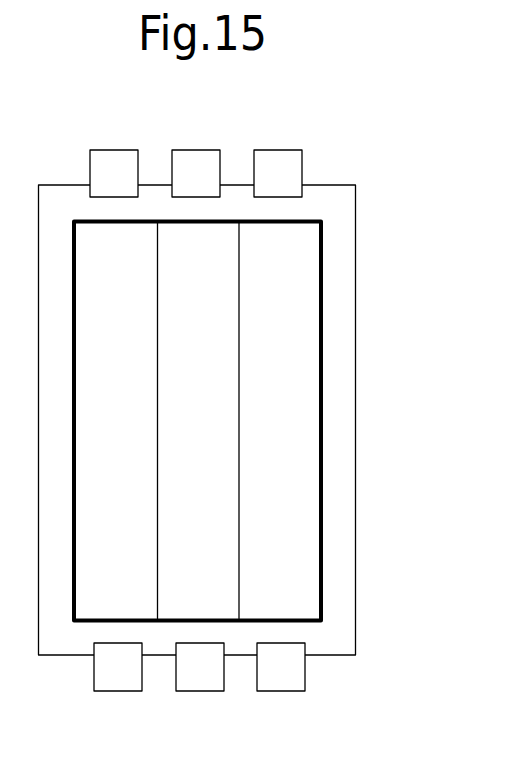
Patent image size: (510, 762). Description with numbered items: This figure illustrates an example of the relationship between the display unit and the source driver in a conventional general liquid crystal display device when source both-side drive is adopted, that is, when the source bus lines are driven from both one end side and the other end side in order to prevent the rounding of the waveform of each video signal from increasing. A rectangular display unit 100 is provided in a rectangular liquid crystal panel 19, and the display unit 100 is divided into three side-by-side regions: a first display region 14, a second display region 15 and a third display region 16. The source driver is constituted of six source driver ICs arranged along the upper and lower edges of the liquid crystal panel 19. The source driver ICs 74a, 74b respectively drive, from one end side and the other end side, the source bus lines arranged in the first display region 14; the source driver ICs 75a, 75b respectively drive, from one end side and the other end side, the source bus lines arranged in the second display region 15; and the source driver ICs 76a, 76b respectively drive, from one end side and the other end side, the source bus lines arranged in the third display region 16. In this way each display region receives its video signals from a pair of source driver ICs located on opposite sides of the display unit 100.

The first display region 14 is at (113, 322).
The second display region 15 is at (193, 405).
The third display region 16 is at (275, 520).
The liquid crystal panel 19 is at (331, 184).
The display unit 100 is at (270, 219).
The source driver IC 74a is at (110, 149).
The source driver IC 75a is at (192, 149).
The source driver IC 76a is at (274, 149).
The source driver IC 74b is at (119, 691).
The source driver IC 75b is at (201, 691).
The source driver IC 76b is at (282, 691).